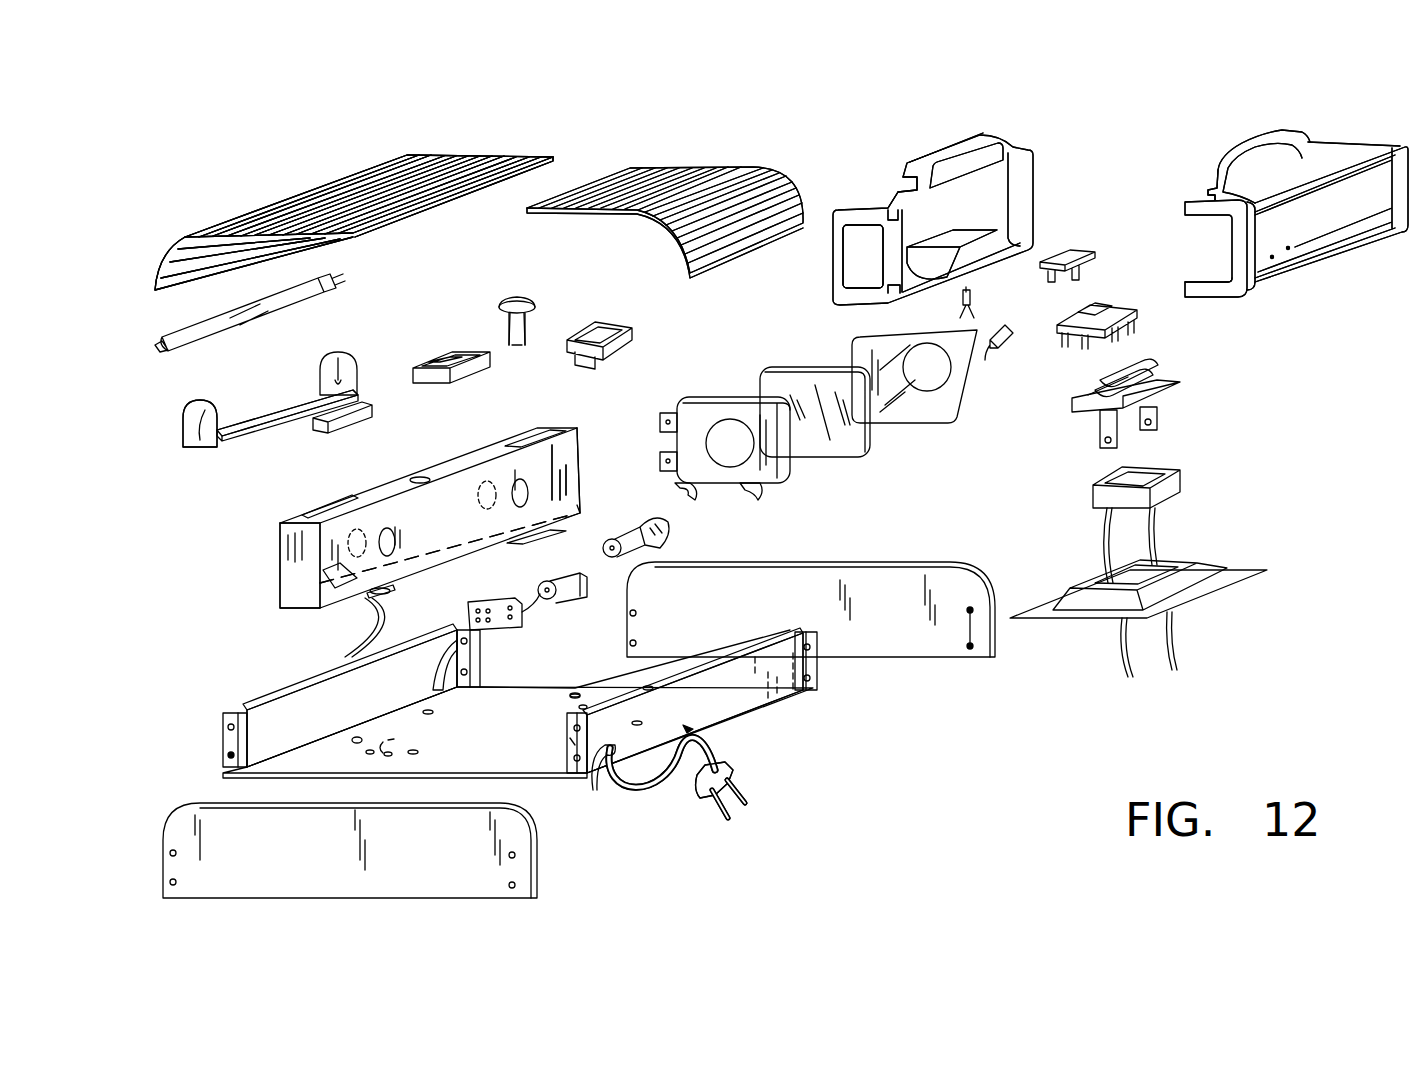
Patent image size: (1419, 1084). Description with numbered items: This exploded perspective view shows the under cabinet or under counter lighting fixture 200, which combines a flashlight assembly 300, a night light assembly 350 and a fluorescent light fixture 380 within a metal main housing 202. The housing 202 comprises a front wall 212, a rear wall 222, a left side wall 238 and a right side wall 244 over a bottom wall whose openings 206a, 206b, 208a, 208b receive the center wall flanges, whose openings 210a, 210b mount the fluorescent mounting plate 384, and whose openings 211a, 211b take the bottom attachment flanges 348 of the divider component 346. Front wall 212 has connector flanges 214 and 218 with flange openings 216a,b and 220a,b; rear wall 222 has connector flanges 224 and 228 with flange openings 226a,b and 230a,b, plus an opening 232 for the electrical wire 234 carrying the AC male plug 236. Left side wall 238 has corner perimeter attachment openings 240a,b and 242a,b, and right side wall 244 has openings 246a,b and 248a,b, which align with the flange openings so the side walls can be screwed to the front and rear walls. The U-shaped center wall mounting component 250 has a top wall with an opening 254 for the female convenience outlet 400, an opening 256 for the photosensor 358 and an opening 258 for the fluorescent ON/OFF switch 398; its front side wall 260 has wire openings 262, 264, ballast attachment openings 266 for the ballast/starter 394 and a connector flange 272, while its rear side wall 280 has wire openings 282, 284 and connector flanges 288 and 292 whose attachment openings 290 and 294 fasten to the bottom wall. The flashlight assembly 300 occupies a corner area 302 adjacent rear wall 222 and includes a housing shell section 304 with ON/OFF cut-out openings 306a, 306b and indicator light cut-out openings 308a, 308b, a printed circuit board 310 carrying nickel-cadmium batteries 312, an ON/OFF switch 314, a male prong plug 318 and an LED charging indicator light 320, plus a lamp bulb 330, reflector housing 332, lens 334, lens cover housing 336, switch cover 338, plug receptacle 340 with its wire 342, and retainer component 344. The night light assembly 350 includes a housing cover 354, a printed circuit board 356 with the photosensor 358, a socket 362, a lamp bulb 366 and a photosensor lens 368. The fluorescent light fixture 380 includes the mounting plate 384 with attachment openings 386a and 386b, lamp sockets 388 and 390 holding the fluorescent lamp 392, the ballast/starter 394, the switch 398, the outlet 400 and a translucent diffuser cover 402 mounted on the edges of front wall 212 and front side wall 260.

The under cabinet/counter lighting fixture 200 is at (387, 112).
The main housing 202 is at (818, 700).
The bottom wall opening 206a is at (545, 692).
The bottom wall opening 206b is at (385, 750).
The bottom wall opening 208a is at (580, 695).
The bottom wall opening 208b is at (418, 752).
The bottom wall opening 210a is at (433, 711).
The bottom wall opening 210b is at (366, 748).
The bottom wall attachment opening 211a is at (653, 689).
The bottom wall attachment opening 211b is at (642, 722).
The front wall 212 is at (265, 690).
The connector flange 214 is at (472, 655).
The flange openings 216a,b is at (450, 672).
The connector flange 218 is at (250, 737).
The flange openings 220a,b is at (232, 740).
The rear wall 222 is at (690, 730).
The connector flange 224 is at (793, 628).
The flange openings 226a,b is at (820, 650).
The connector flange 228 is at (570, 738).
The flange openings 230a,b is at (577, 775).
The opening 232 is at (600, 755).
The electrical wire 234 is at (668, 782).
The AC male plug 236 is at (740, 780).
The left side wall 238 is at (933, 592).
The front corner perimeter attachment openings 240a,b is at (636, 612).
The rear corner perimeter attachment openings 242a,b is at (972, 650).
The right side wall 244 is at (410, 863).
The front corner perimeter attachment openings 246a,b is at (177, 880).
The rear corner perimeter attachment openings 248a,b is at (516, 860).
The center wall mounting component 250 is at (278, 572).
The opening 254 is at (325, 505).
The opening 256 is at (420, 478).
The opening 258 is at (552, 430).
The front side wall 260 is at (300, 587).
The electrical wire opening 262 is at (487, 482).
The electrical wire opening 264 is at (360, 530).
The ballast attachment openings 266 is at (460, 497).
The connector flange 272 is at (335, 572).
The rear side wall 280 is at (560, 453).
The electrical wire opening 282 is at (533, 490).
The electrical wire opening 284 is at (387, 530).
The connector flange 288 is at (535, 545).
The attachment opening 290 is at (578, 520).
The connector flange 292 is at (352, 655).
The attachment opening 294 is at (367, 595).
The flashlight assembly 300 is at (1108, 135).
The corner area 302 is at (1280, 125).
The flashlight housing shell section 304 is at (973, 130).
The ON/OFF cut-out opening 306a is at (1217, 165).
The ON/OFF cut-out opening 306b is at (903, 188).
The indicator light cut-out opening 308a is at (1208, 195).
The indicator light cut-out opening 308b is at (895, 208).
The printed circuit board 310 is at (1157, 395).
The nickel-cadmium batteries 312 is at (1150, 370).
The ON/OFF switch 314 is at (1140, 337).
The male prong plug 318 is at (1153, 428).
The LED charging indicator light 320 is at (975, 292).
The flashlight lamp bulb 330 is at (1003, 336).
The reflector housing 332 is at (935, 400).
The lens 334 is at (840, 447).
The lens cover housing 336 is at (863, 297).
The switch cover 338 is at (1070, 252).
The flashlight plug receptacle 340 is at (1165, 483).
The electrical wire 342 is at (1128, 655).
The flashlight retainer component 344 is at (1200, 572).
The lamp housing 346 is at (775, 480).
The metal divider bottom attachment flanges 348 is at (713, 487).
The night light assembly 350 is at (692, 152).
The night light housing cover 354 is at (648, 172).
The printed circuit board 356 is at (468, 607).
The photosensor 358 is at (522, 322).
The night light socket 362 is at (560, 604).
The night light lamp bulb 366 is at (660, 527).
The photosensor lens 368 is at (517, 300).
The fluorescent light fixture 380 is at (318, 160).
The mounting plate 384 is at (243, 430).
The attachment opening 386a is at (282, 405).
The attachment opening 386b is at (257, 410).
The fluorescent lamp socket 388 is at (355, 365).
The fluorescent lamp socket 390 is at (200, 432).
The lamp tube 392 is at (290, 283).
The ballast/starter 394 is at (340, 437).
The manual ON/OFF switch 398 is at (618, 320).
The female convenience outlet plug 400 is at (458, 350).
The translucent diffuser cover 402 is at (448, 150).